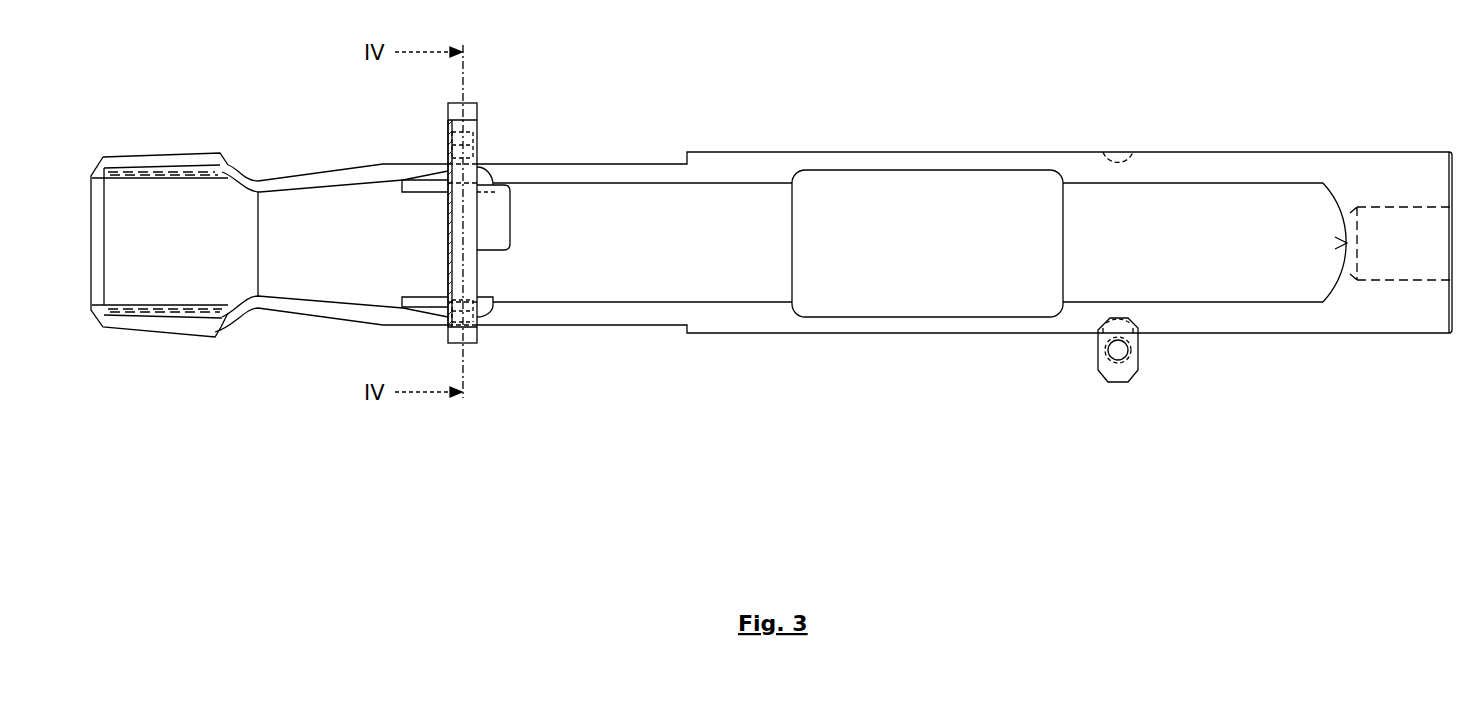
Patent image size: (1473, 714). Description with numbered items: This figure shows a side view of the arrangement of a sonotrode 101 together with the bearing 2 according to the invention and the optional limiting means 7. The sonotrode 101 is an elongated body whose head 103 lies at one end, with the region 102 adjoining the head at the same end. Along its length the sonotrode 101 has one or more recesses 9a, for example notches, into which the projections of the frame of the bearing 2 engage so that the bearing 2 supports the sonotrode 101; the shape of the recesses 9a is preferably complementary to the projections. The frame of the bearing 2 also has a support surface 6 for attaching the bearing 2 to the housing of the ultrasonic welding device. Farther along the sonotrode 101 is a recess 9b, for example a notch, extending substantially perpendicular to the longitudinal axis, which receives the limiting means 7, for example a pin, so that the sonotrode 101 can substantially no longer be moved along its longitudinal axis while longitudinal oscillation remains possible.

The sonotrode 101 is at (1398, 165).
The thread region of head 102 is at (160, 333).
The head 103 is at (160, 203).
The bearing 2 is at (465, 102).
The support surface 6 is at (494, 178).
The limiting means 7 is at (1118, 383).
The recesses 9a is at (420, 185).
The recess 9b is at (1135, 320).